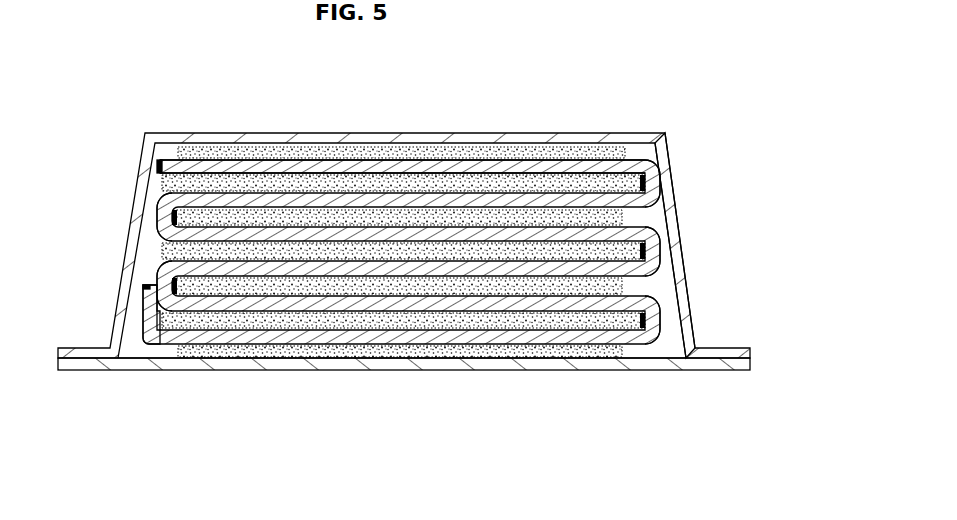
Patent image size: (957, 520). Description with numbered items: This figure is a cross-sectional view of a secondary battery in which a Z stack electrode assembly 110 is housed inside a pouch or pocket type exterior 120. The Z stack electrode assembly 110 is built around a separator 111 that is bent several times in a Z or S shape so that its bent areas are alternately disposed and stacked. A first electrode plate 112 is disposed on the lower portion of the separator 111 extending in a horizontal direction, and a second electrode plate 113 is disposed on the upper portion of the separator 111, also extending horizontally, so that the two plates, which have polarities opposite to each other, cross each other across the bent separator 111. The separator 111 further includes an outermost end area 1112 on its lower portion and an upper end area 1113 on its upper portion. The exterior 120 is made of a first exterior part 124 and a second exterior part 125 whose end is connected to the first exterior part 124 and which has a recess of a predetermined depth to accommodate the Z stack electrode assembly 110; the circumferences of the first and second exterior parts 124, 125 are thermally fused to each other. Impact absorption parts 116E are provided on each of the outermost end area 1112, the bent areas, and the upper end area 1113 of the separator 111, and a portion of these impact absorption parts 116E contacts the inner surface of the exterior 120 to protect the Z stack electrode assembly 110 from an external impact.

The Z stack electrode assembly 110 is at (409, 261).
The separator 111 is at (570, 163).
The outermost end area 1112 is at (152, 340).
The upper end area 1113 is at (207, 163).
The first electrode plate 112 is at (270, 360).
The second electrode plate 113 is at (373, 327).
The impact absorption part 116E is at (663, 194).
The exterior 120 is at (669, 128).
The first exterior part 124 is at (657, 362).
The second exterior part 125 is at (690, 318).